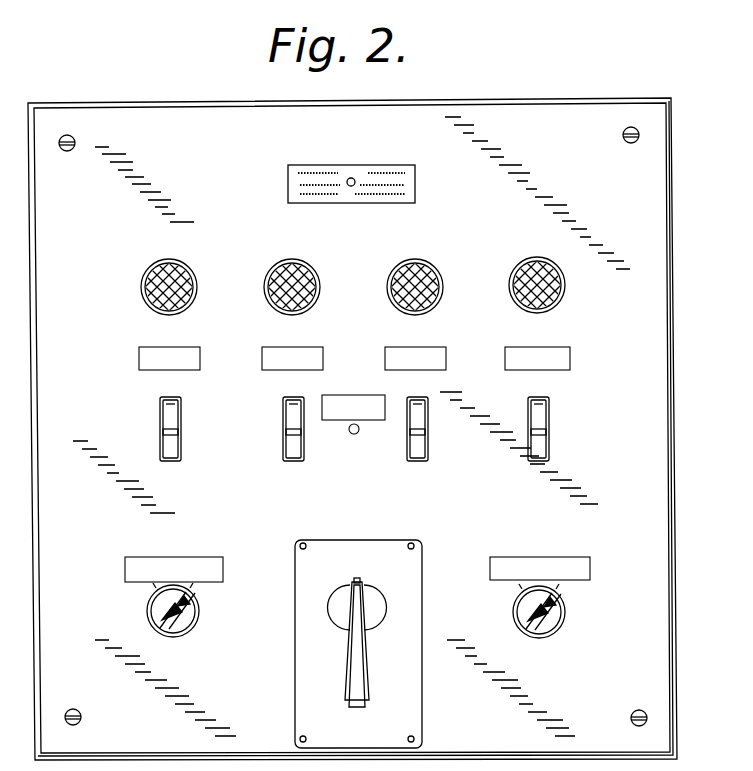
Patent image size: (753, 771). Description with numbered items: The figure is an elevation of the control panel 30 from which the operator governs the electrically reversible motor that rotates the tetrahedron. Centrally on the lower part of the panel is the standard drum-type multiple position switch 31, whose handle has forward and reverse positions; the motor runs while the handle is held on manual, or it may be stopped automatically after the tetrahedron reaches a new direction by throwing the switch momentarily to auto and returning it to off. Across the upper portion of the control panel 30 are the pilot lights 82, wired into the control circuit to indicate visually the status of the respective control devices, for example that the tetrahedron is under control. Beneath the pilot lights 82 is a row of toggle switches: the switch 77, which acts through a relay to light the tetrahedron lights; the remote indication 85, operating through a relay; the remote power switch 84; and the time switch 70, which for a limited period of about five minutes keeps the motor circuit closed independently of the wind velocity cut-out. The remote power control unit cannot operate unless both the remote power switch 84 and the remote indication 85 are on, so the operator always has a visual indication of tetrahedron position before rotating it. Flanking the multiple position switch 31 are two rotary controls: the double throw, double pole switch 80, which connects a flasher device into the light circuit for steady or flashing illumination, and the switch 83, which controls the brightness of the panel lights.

The control panel 30 is at (683, 478).
The multiple position switch 31 is at (360, 693).
The time switch 70 is at (549, 420).
The switch 77 is at (160, 425).
The double throw, double pole switch 80 is at (148, 614).
The pilot lights 82 is at (167, 260).
The switch 83 is at (560, 627).
The remote power switch 84 is at (407, 421).
The remote indication 85 is at (283, 426).